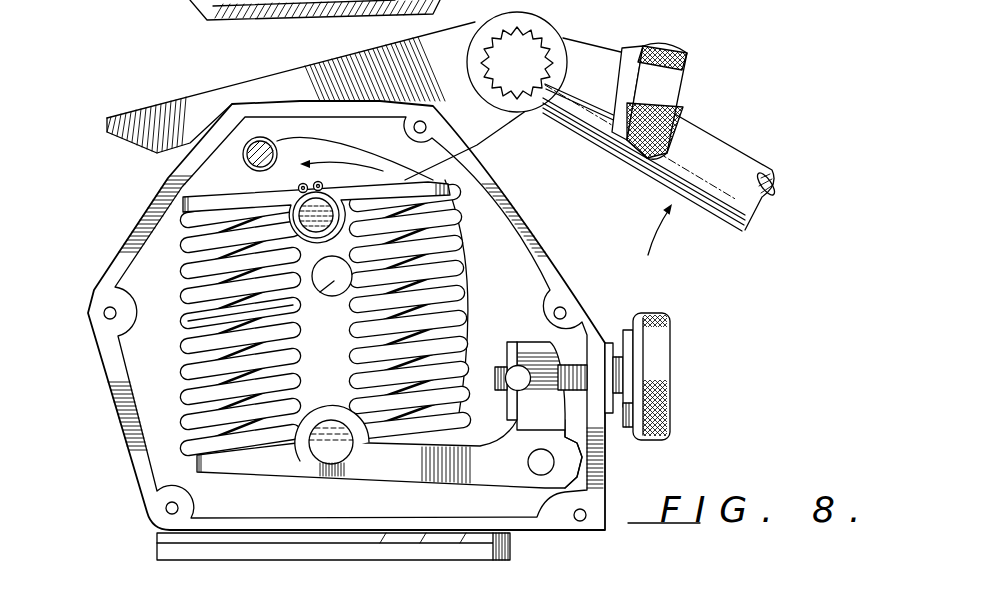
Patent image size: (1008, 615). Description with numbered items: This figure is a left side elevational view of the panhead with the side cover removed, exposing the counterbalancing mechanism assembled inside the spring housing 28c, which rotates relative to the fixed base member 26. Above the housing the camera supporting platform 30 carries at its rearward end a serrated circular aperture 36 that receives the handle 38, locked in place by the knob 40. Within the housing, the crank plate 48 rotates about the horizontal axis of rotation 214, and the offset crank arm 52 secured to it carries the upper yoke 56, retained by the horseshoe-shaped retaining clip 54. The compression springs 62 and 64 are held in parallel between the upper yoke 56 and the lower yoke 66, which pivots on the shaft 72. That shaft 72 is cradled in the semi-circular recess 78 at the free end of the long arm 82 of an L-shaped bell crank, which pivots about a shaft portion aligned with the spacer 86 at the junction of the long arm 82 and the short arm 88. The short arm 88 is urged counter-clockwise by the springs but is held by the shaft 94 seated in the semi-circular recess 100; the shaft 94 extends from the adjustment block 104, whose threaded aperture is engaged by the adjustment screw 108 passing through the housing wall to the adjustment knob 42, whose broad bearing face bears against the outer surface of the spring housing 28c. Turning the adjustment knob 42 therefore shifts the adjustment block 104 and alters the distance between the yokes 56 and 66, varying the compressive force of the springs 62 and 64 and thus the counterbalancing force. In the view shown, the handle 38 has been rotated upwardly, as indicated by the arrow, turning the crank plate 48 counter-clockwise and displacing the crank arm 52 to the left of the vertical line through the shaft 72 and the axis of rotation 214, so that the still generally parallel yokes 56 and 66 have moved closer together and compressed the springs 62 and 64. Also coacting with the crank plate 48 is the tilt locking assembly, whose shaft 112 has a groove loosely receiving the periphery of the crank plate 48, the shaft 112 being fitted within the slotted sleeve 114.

The base member 26 is at (363, 547).
The spring housing 28c is at (120, 398).
The camera supporting platform 30 is at (205, 102).
The serrated circular aperture 36 is at (540, 40).
The handle 38 is at (733, 153).
The knob 40 is at (665, 91).
The adjustment knob 42 is at (657, 357).
The crank plate 48 is at (339, 340).
The crank arm 52 is at (327, 188).
The retaining clip 54 is at (300, 189).
The upper yoke 56 is at (482, 150).
The compression spring 62 is at (197, 289).
The compression spring 64 is at (450, 270).
The lower yoke 66 is at (253, 465).
The shaft 72 is at (323, 447).
The semi-circular recess 78 is at (353, 453).
The long arm 82 is at (433, 470).
The spacer 86 is at (541, 462).
The short arm 88 is at (590, 452).
The shaft 94 is at (522, 381).
The semi-circular recess 100 is at (510, 370).
The adjustment block 104 is at (512, 347).
The adjustment screw 108 is at (568, 372).
The shaft 112 is at (243, 147).
The slotted sleeve 114 is at (277, 141).
The axis of rotation 214 is at (190, 322).